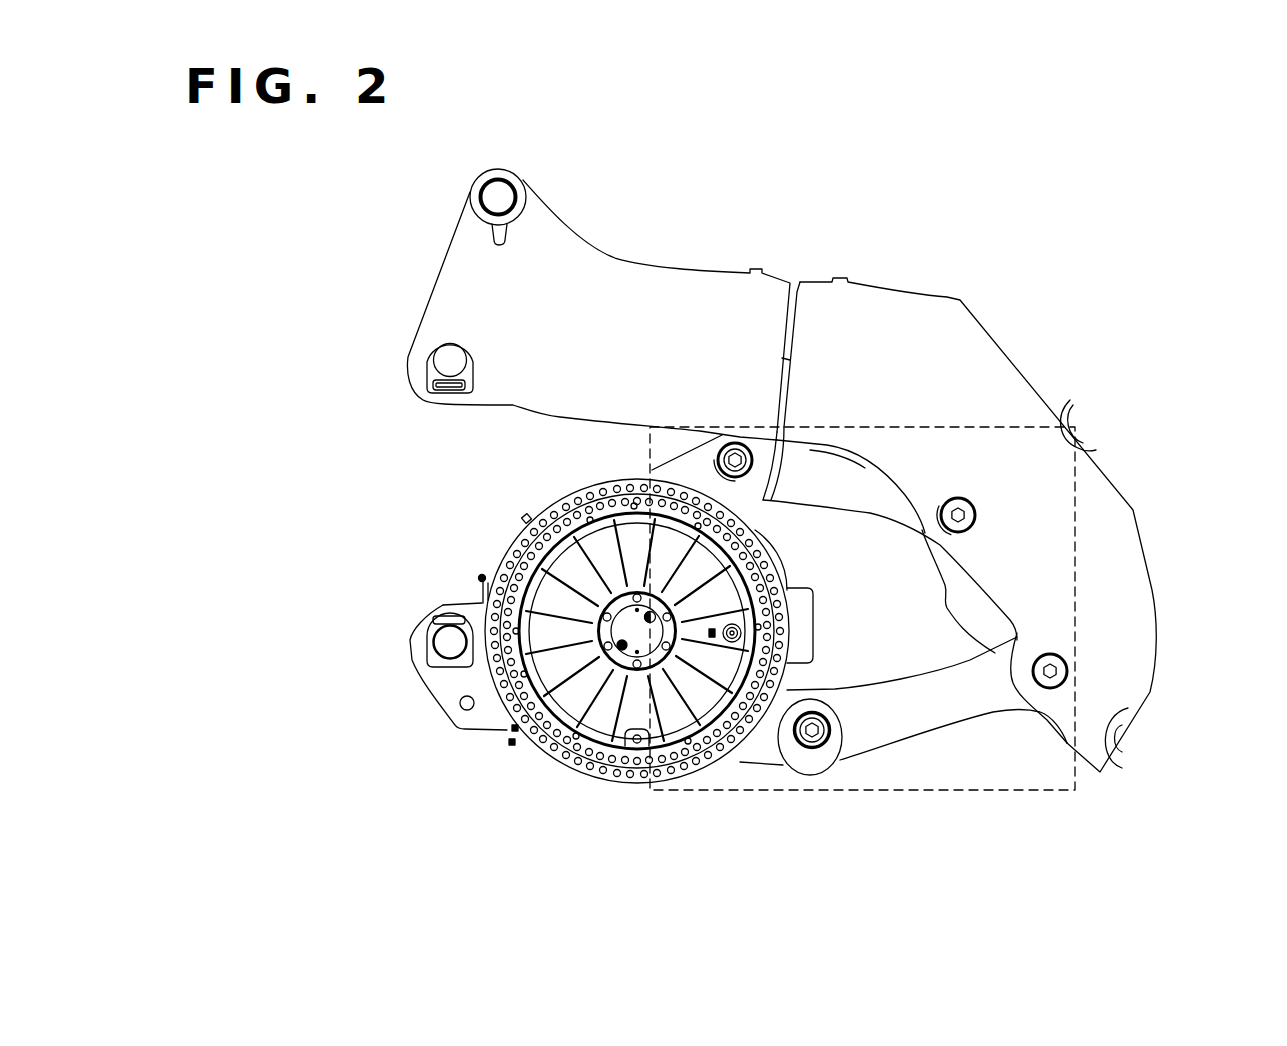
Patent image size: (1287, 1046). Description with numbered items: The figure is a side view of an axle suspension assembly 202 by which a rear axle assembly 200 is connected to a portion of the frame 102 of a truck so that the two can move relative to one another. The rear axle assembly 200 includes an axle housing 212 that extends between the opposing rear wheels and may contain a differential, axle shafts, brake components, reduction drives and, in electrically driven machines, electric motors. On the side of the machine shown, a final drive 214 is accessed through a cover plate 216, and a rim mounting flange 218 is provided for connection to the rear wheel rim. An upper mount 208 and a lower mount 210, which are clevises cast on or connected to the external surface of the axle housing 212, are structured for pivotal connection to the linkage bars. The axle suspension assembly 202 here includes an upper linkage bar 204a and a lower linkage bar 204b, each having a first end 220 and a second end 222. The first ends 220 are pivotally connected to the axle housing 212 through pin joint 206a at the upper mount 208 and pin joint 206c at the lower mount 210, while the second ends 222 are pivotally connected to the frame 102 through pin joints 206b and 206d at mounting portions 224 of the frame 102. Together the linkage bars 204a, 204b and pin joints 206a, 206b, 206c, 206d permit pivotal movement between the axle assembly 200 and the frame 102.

The frame 102 is at (949, 299).
The rear axle assembly 200 is at (502, 500).
The axle suspension assembly 202 is at (878, 790).
The upper linkage bar 204a is at (845, 517).
The lower linkage bar 204b is at (962, 720).
The pin joint 206a is at (748, 448).
The pin joint 206b is at (975, 500).
The pin joint 206c is at (830, 710).
The pin joint 206d is at (1067, 658).
The upper mount 208 is at (683, 450).
The lower mount 210 is at (751, 762).
The axle housing 212 is at (482, 603).
The final drive 214 is at (519, 776).
The cover plate 216 is at (513, 712).
The rim mounting flange 218 is at (492, 667).
The first end 220 is at (795, 492).
The second end 222 is at (942, 604).
The mounting portion 224 is at (980, 535).